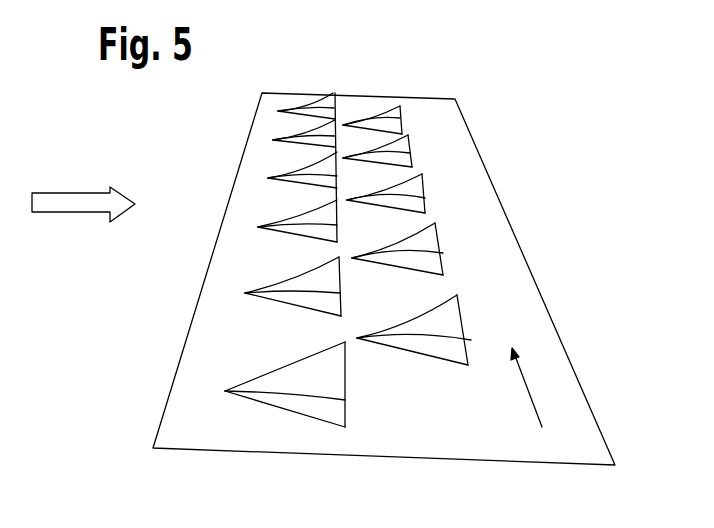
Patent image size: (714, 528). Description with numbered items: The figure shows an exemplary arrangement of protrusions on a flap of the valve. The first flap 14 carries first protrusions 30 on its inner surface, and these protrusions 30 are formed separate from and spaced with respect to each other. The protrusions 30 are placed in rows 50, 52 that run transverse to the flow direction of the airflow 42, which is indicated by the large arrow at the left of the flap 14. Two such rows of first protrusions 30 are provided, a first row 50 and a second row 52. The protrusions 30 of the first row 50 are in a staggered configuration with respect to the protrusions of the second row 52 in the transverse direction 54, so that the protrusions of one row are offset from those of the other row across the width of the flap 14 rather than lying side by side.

The first flap 14 is at (470, 188).
The first protrusions 30 is at (270, 382).
The airflow 42 is at (73, 205).
The first row 50 is at (319, 90).
The second row 52 is at (388, 90).
The transverse direction 54 is at (533, 400).